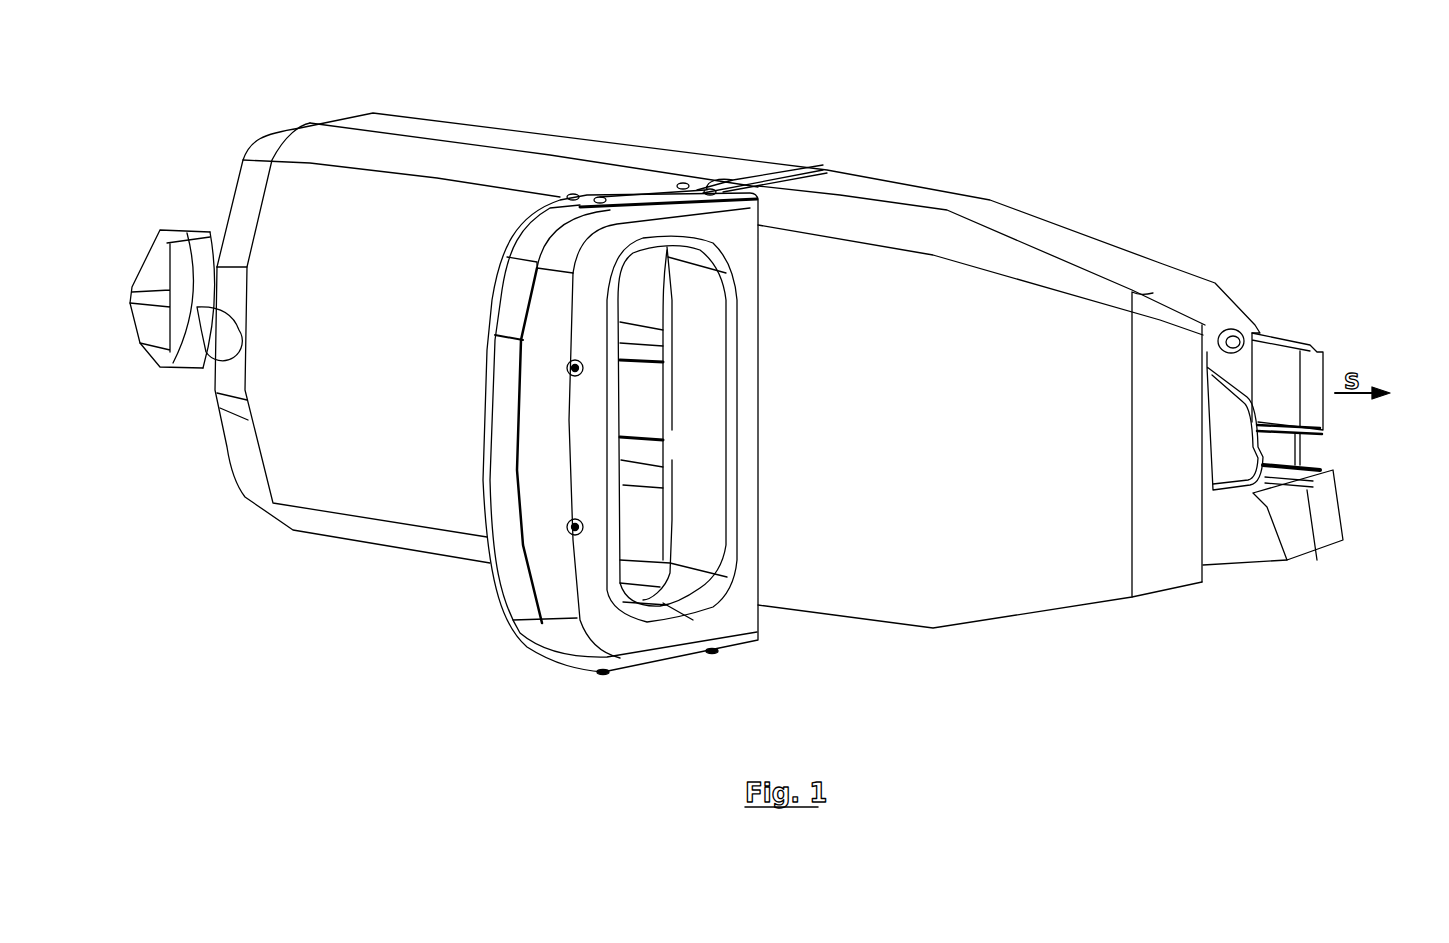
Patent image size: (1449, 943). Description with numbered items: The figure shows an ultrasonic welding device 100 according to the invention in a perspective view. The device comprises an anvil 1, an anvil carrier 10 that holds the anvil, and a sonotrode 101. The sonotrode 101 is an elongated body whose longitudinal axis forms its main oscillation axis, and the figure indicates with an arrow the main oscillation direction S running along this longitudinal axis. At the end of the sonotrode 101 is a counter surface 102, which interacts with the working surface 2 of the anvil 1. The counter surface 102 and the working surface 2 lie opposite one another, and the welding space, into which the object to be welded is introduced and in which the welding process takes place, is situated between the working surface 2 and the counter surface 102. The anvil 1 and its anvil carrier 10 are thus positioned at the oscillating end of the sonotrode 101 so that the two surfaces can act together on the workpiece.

The ultrasonic welding device 100 is at (347, 127).
The sonotrode 101 is at (1278, 363).
The counter surface 102 is at (1333, 437).
The working surface 2 is at (1333, 464).
The anvil carrier 10 is at (1232, 548).
The anvil 1 is at (1297, 548).